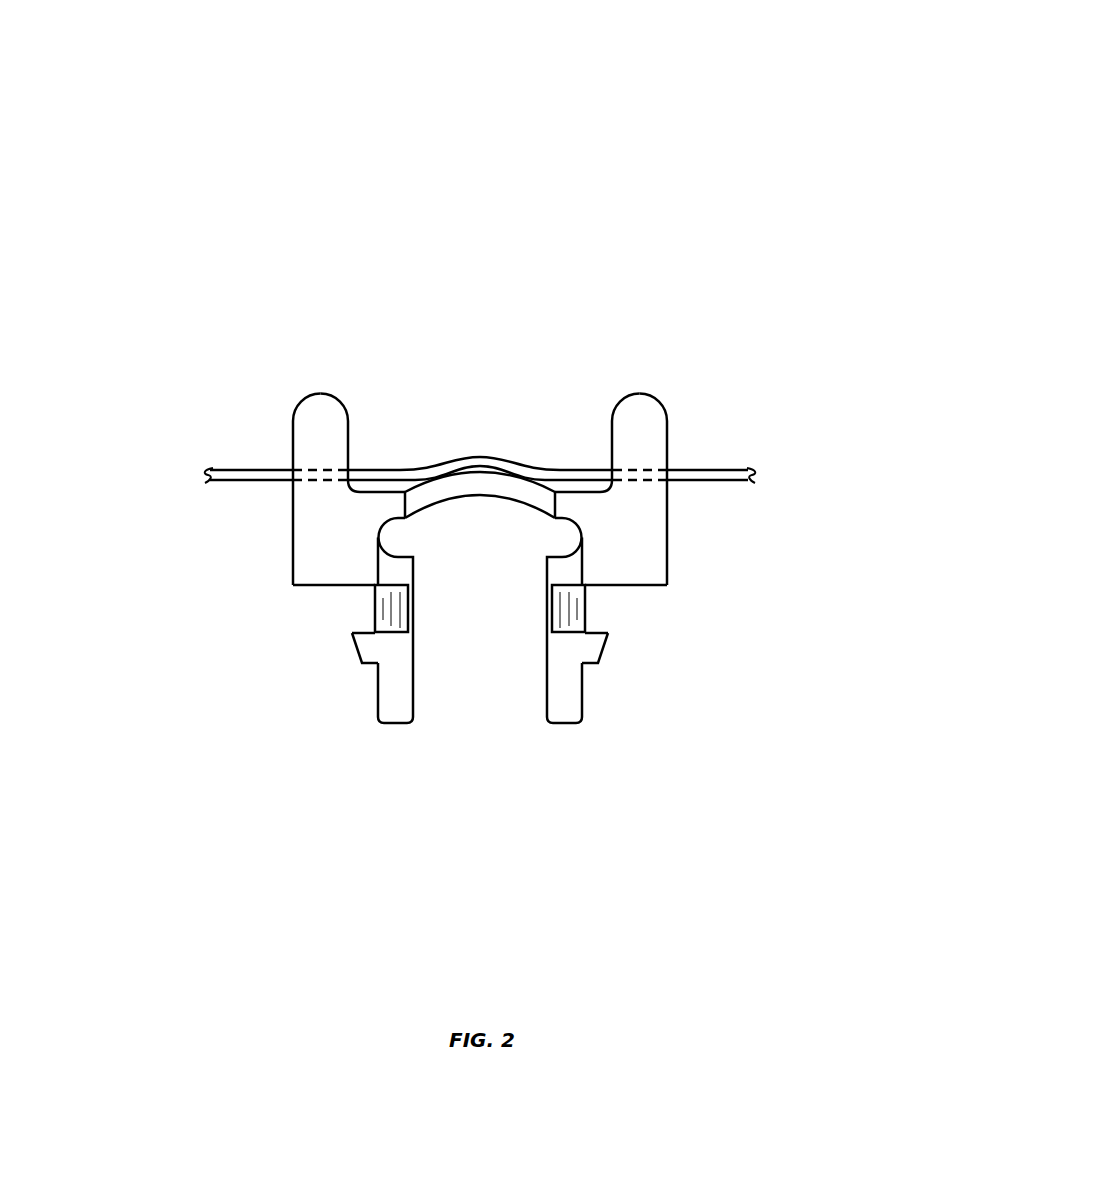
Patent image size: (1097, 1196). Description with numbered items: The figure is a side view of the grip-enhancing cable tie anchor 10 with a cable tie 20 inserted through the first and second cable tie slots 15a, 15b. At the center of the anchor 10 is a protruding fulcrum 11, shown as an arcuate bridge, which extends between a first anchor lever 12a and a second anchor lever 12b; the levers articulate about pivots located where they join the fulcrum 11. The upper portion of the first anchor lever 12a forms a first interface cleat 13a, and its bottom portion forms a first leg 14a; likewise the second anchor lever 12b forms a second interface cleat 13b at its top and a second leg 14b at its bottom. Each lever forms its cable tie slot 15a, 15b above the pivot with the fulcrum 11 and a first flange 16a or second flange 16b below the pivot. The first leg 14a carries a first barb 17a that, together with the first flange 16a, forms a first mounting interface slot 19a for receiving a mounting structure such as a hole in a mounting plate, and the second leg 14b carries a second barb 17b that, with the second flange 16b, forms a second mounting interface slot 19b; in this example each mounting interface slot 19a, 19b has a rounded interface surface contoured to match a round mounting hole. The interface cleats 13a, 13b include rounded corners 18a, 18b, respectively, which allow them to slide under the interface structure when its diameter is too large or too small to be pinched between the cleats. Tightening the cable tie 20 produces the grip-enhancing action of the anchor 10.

The grip-enhancing cable tie anchor 10 is at (503, 433).
The fulcrum 11 is at (480, 667).
The first anchor lever 12a is at (231, 513).
The second anchor lever 12b is at (757, 517).
The first interface cleat 13a is at (277, 278).
The second interface cleat 13b is at (689, 282).
The first leg 14a is at (366, 691).
The second leg 14b is at (604, 688).
The first cable tie slot 15a is at (197, 401).
The second cable tie slot 15b is at (759, 387).
The first flange 16a is at (244, 642).
The second flange 16b is at (727, 641).
The first barb 17a is at (299, 733).
The second barb 17b is at (683, 748).
The first rounded corner 18a is at (385, 296).
The second rounded corner 18b is at (571, 296).
The first mounting interface slot 19a is at (233, 735).
The second mounting interface slot 19b is at (744, 725).
The cable tie 20 is at (577, 463).